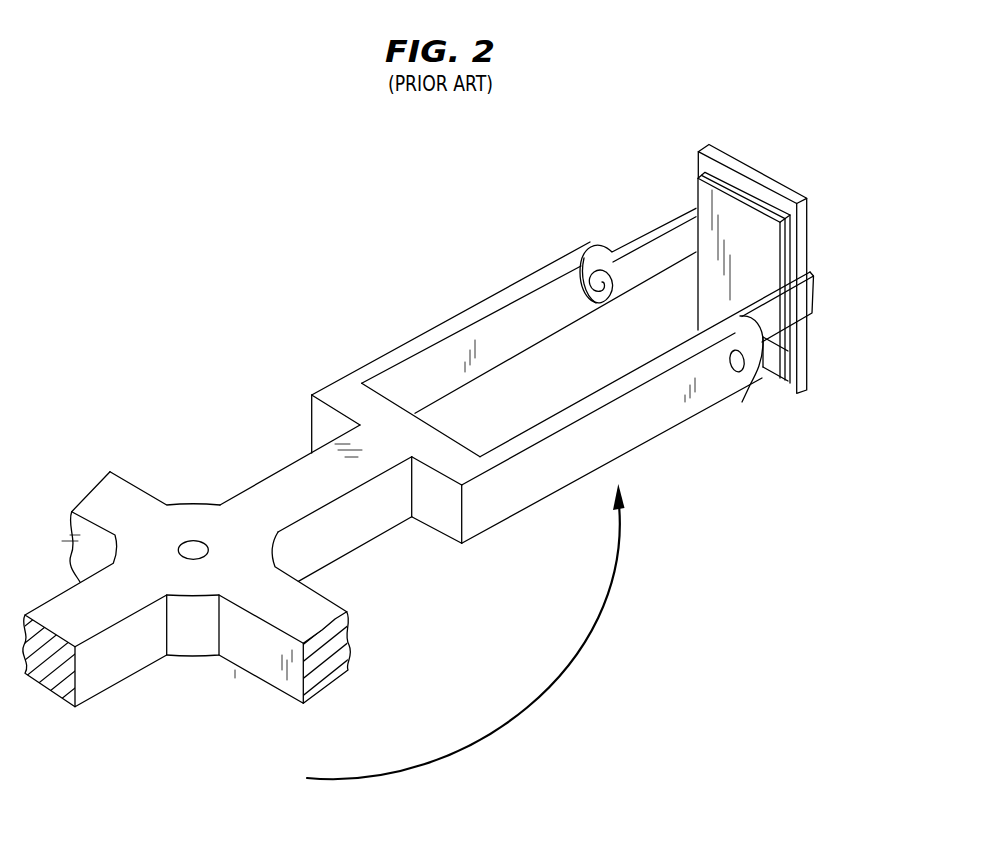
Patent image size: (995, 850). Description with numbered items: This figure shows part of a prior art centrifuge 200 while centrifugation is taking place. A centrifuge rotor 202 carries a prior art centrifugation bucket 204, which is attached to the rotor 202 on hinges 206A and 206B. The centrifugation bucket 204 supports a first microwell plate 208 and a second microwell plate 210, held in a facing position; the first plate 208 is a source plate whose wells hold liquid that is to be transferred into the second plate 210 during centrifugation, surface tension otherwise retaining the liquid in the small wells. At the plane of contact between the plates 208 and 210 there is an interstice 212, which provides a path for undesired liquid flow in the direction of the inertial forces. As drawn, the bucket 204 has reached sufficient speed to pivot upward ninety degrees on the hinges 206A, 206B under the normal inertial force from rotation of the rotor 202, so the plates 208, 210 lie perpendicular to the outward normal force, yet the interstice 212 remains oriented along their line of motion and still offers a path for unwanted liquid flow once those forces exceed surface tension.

The centrifuge 200 is at (844, 203).
The centrifuge rotor 202 is at (323, 443).
The centrifugation bucket 204 is at (730, 158).
The hinge 206A is at (590, 242).
The hinge 206B is at (736, 371).
The first microwell plate 208 is at (789, 382).
The second microwell plate 210 is at (786, 260).
The interstice 212 is at (746, 200).